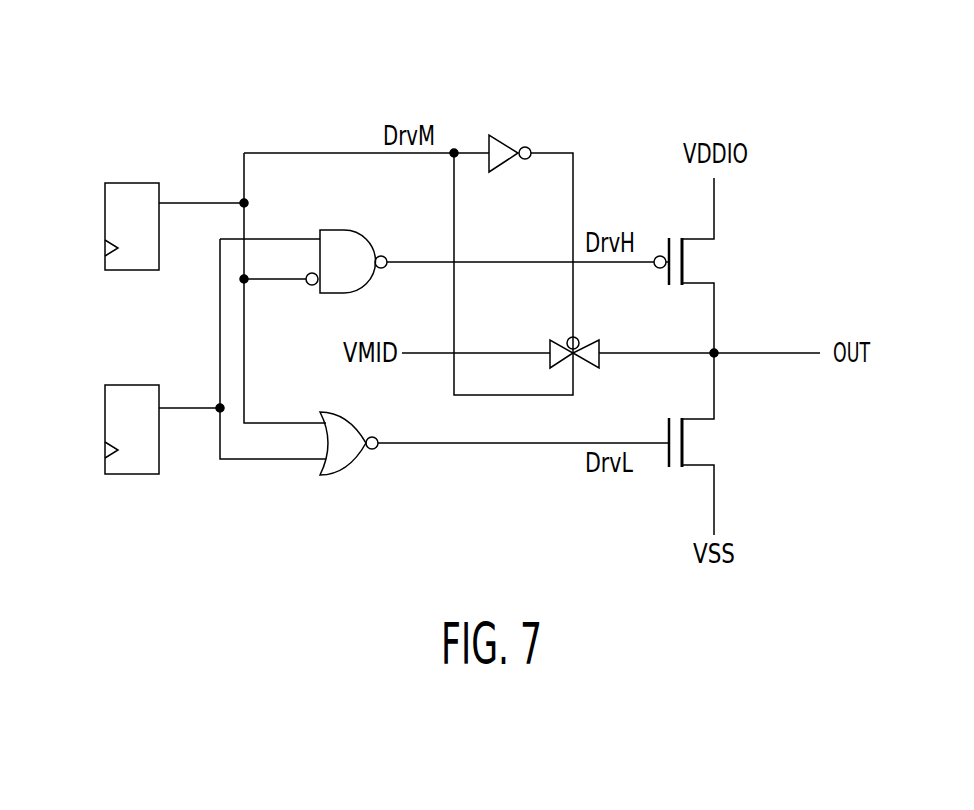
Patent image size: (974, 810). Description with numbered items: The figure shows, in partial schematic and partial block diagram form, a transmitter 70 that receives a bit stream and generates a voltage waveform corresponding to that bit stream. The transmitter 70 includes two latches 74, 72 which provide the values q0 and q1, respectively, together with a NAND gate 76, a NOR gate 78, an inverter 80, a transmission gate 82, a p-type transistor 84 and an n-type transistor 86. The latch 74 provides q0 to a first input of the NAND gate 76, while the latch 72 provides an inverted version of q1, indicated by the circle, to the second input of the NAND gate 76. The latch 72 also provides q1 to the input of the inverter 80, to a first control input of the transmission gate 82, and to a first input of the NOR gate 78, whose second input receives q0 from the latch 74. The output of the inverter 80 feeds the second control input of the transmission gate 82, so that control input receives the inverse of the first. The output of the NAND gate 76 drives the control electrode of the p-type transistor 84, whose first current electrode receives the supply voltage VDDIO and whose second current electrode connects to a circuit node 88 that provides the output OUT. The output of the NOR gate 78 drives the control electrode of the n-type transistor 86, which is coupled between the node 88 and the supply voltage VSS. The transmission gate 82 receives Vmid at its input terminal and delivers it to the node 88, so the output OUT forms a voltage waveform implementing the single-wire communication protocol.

The transmitter 70 is at (855, 128).
The latch 72 is at (130, 183).
The latch 74 is at (130, 475).
The NAND gate 76 is at (340, 230).
The NOR gate 78 is at (346, 476).
The inverter 80 is at (500, 133).
The transmission gate 82 is at (590, 341).
The p-type transistor 84 is at (688, 268).
The n-type transistor 86 is at (688, 445).
The circuit node 88 is at (718, 357).